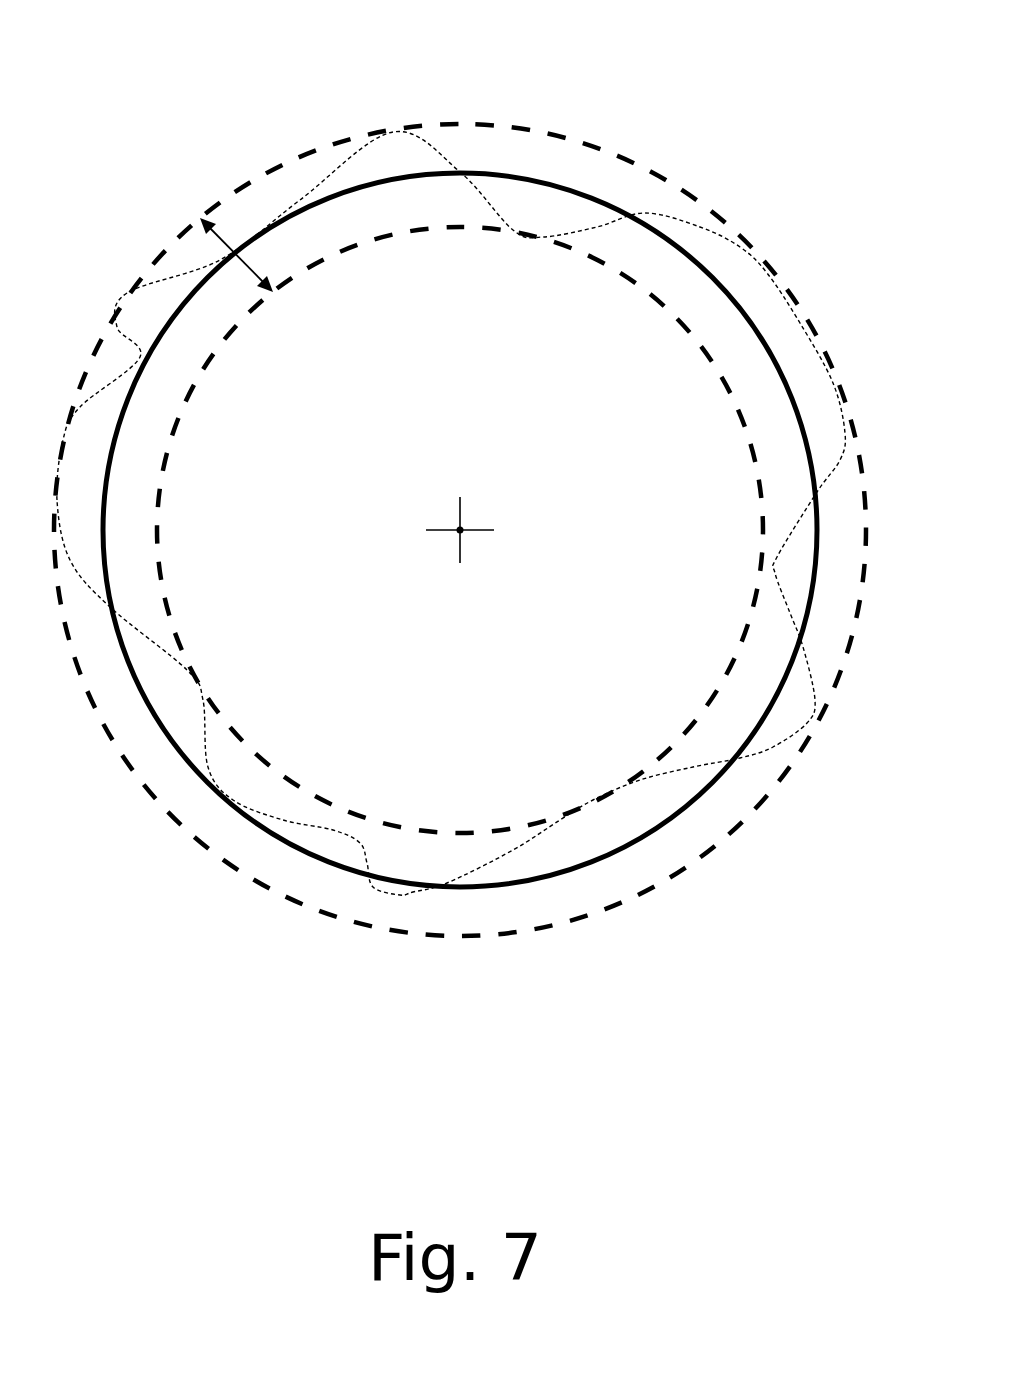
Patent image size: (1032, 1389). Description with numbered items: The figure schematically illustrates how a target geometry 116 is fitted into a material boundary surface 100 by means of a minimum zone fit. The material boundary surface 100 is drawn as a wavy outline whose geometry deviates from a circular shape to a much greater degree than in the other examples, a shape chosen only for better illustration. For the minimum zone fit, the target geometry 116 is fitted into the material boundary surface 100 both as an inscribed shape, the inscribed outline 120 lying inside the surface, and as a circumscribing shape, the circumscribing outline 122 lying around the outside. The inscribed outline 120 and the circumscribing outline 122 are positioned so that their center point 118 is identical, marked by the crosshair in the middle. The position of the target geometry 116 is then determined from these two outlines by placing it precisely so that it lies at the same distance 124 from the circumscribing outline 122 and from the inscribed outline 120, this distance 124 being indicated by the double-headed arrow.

The material boundary surface 100 is at (595, 225).
The target geometry 116 is at (773, 268).
The center point 118 is at (462, 533).
The inscribed figure 120 is at (455, 227).
The circumscribing figure 122 is at (632, 160).
The distance 124 is at (240, 267).